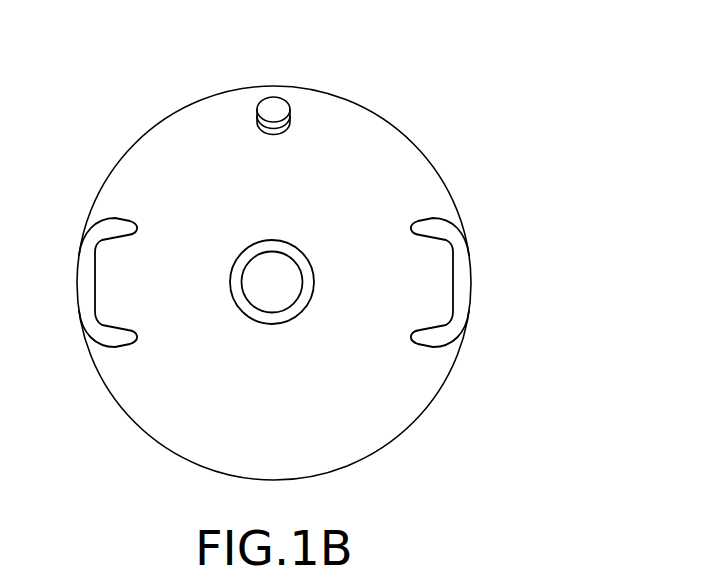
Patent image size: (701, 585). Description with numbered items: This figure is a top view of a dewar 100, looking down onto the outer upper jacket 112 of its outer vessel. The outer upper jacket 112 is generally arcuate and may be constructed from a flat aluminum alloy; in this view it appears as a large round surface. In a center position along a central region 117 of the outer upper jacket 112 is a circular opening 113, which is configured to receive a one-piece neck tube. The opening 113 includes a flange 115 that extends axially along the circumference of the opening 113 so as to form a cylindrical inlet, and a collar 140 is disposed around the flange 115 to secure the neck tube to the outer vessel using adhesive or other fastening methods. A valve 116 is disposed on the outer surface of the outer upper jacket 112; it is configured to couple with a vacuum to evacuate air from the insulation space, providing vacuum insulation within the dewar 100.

The dewar 100 is at (472, 43).
The outer upper jacket 112 is at (383, 157).
The opening 113 is at (257, 307).
The flange 115 is at (300, 306).
The valve 116 is at (281, 108).
The central region 117 is at (199, 326).
The collar 140 is at (314, 302).